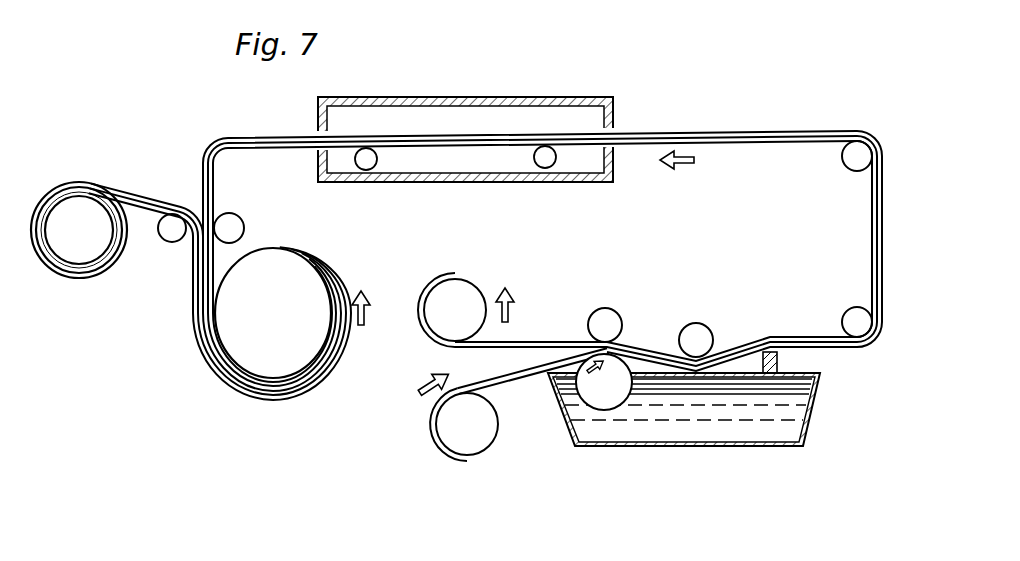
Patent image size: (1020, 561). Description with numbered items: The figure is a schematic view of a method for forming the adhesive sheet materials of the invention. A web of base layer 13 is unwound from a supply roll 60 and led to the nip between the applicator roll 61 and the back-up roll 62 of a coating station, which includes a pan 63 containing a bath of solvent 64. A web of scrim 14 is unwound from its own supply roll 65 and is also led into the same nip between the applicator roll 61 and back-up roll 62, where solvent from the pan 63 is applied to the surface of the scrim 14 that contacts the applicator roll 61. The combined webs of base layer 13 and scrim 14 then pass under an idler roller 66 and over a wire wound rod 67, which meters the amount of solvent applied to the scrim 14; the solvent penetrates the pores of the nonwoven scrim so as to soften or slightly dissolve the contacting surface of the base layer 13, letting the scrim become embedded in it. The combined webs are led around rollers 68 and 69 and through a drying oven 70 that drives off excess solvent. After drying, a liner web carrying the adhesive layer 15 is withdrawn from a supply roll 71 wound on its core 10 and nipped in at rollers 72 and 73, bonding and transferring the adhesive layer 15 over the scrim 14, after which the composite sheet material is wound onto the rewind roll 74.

The core 10 is at (97, 231).
The base layer 13 is at (872, 227).
The scrim 14 is at (883, 157).
The adhesive layer 15 is at (107, 183).
The supply roll 60 is at (458, 288).
The applicator roll 61 is at (600, 390).
The back-up roll 62 is at (603, 317).
The pan 63 is at (708, 445).
The solvent 64 is at (793, 403).
The supply roll 65 is at (443, 416).
The idler roller 66 is at (698, 335).
The wire wound rod 67 is at (777, 362).
The roller 68 is at (852, 320).
The roller 69 is at (850, 153).
The drying oven 70 is at (473, 157).
The supply roll 71 is at (68, 252).
The roller 72 is at (172, 222).
The roller 73 is at (232, 228).
The rewind roll 74 is at (303, 280).